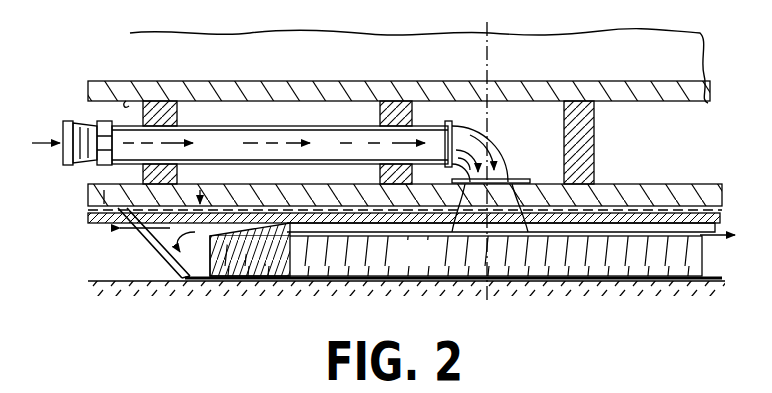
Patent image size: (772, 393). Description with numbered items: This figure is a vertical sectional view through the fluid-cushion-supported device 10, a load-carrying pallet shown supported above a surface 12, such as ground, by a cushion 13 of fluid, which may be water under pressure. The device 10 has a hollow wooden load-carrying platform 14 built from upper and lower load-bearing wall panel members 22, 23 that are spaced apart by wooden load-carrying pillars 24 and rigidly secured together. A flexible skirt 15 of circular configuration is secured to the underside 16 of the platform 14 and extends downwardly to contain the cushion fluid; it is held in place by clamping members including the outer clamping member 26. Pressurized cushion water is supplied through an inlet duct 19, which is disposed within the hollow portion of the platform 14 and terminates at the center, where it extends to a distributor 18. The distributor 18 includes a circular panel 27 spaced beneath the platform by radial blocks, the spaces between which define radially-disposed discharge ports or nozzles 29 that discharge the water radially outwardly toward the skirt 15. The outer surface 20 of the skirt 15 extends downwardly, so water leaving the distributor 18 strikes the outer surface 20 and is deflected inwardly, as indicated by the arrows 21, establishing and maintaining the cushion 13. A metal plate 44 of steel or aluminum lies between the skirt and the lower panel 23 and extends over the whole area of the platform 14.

The fluid-cushion-supported device 10 is at (665, 80).
The surface 12 is at (718, 281).
The cushion 13 is at (428, 263).
The load-carrying platform 14 is at (97, 82).
The flexible skirt 15 is at (150, 250).
The underside 16 is at (128, 105).
The distributor 18 is at (370, 245).
The inlet duct 19 is at (112, 122).
The outer surface 20 is at (165, 258).
The arrows 21 is at (204, 232).
The upper load-bearing wall panel member 22 is at (262, 80).
The lower load-bearing wall panel member 23 is at (314, 192).
The load-carrying pillars 24 is at (596, 133).
The outer clamping member 26 is at (90, 223).
The circular panel 27 is at (603, 200).
The discharge ports or nozzles 29 is at (296, 233).
The metal plate 44 is at (218, 185).